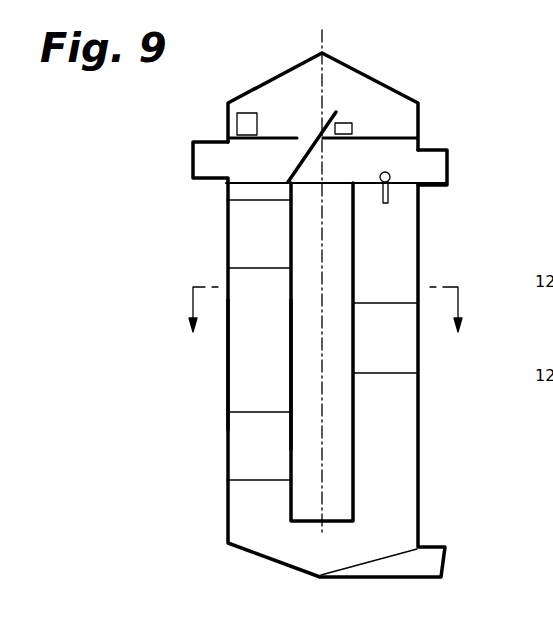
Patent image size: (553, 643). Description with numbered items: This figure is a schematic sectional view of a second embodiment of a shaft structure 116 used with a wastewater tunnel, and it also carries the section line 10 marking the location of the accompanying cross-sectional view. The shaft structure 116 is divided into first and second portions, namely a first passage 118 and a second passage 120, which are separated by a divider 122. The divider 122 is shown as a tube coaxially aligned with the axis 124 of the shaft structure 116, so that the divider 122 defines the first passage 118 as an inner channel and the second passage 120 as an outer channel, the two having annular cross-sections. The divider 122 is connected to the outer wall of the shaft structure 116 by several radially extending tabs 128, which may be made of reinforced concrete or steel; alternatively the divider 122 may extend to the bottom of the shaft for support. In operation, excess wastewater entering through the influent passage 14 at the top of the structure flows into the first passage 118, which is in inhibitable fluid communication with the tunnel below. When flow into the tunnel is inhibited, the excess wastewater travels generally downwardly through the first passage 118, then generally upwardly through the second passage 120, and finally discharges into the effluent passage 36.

The axis 124 is at (324, 33).
The influent passage 14 is at (205, 142).
The effluent passage 36 is at (437, 190).
The shaft structure 116 is at (418, 276).
The first passage 118 is at (305, 242).
The second passage 120 is at (238, 370).
The divider 122 is at (289, 401).
The radially extending tabs 128 is at (252, 200).
The section line 10- 10 is at (324, 326).